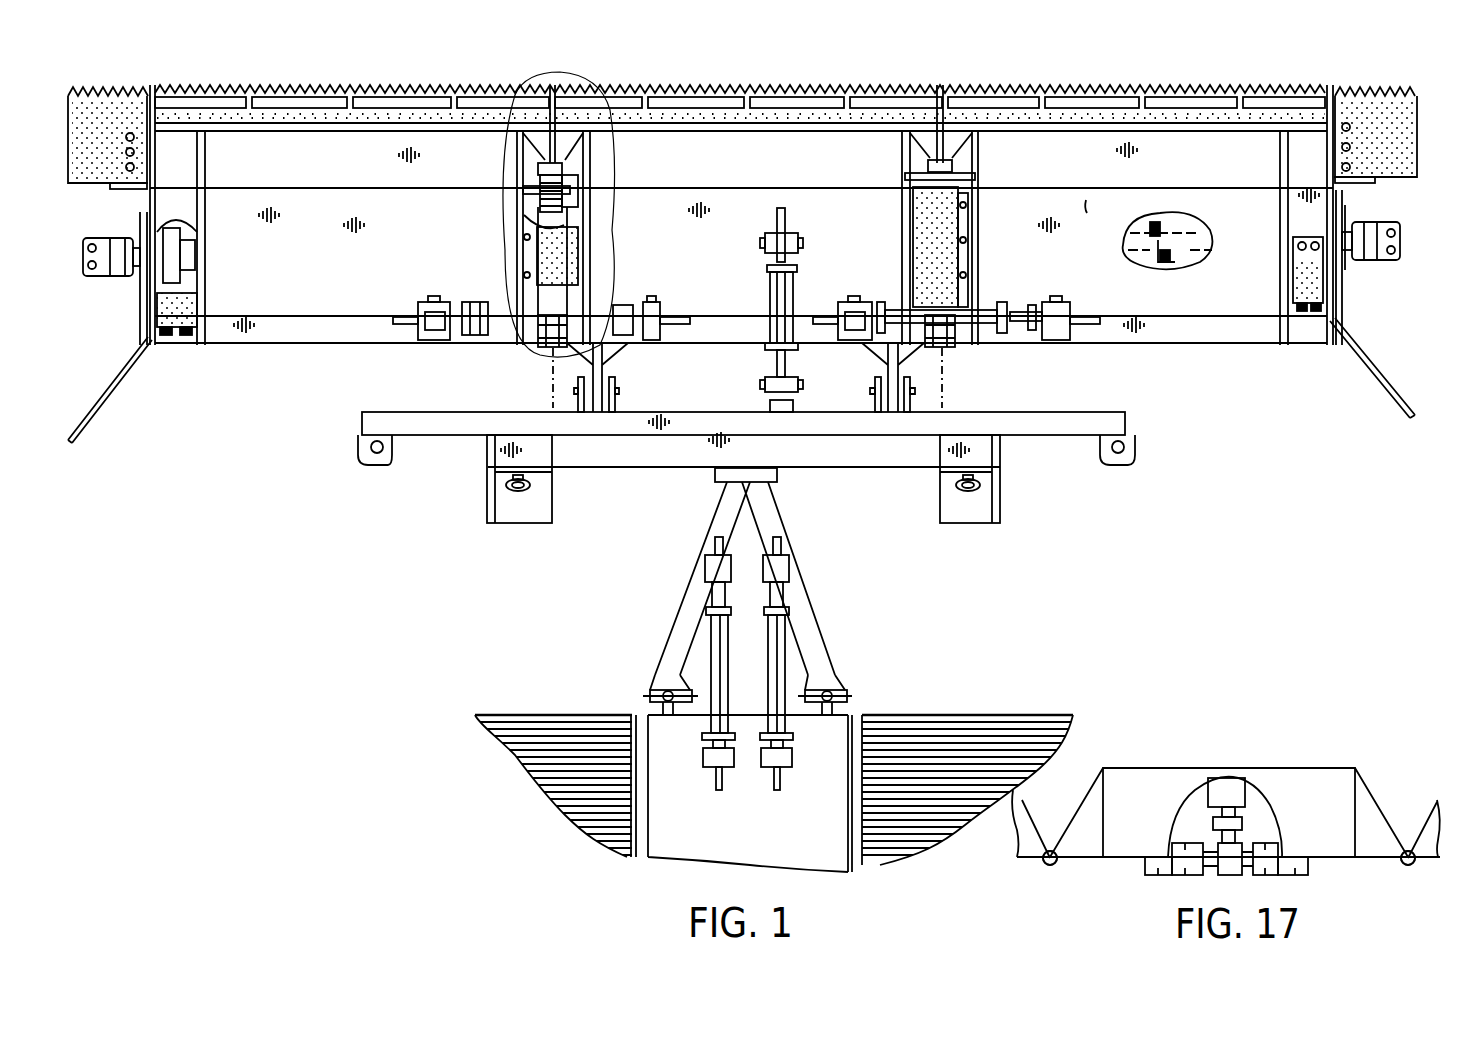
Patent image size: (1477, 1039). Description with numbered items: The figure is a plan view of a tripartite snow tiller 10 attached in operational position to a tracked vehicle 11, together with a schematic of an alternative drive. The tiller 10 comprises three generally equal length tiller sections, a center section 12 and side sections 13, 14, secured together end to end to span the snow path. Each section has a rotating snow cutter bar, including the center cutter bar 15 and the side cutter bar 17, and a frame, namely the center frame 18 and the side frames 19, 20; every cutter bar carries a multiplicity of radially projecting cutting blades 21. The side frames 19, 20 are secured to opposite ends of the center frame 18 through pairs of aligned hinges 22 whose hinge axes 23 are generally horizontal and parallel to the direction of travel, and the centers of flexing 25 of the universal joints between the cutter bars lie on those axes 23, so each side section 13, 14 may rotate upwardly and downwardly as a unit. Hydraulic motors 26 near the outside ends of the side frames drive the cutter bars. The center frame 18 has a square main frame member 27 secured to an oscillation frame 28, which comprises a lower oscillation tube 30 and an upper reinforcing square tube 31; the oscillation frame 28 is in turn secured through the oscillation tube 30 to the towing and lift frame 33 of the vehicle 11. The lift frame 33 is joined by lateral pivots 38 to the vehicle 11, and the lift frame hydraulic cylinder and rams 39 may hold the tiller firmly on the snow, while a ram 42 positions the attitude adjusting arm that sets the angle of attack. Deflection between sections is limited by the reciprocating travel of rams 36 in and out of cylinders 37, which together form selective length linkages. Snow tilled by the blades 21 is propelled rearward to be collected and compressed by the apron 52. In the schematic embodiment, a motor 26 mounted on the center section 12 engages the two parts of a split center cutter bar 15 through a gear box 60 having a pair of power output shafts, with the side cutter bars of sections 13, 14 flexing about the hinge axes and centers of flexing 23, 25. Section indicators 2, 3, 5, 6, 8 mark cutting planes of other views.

In FIG. 1, the section line 2- 2 is at (53, 128).
In FIG. 1, the section line 3- 3 is at (1263, 437).
In FIG. 1, the cylinder support frame assembly 5 is at (610, 226).
In FIG. 1, the section line 6- 6 is at (838, 400).
In FIG. 1, the section line 8- 8 is at (892, 163).
In FIG. 1, the snow tiller 10 is at (268, 422).
In FIG. 1, the tracked vehicle 11 is at (1072, 712).
In FIG. 1, the center section 12 is at (735, 290).
In FIG. 17, the center section 12 is at (1297, 760).
In FIG. 1, the side section 13 is at (330, 282).
In FIG. 17, the side section 13 is at (1418, 835).
In FIG. 1, the side section 14 is at (1197, 277).
In FIG. 17, the side section 14 is at (1032, 828).
In FIG. 17, the center cutter bar 15 is at (1145, 872).
In FIG. 1, the cutter bar 17 is at (1190, 248).
In FIG. 1, the center frame 18 is at (695, 343).
In FIG. 1, the side frame 19 is at (360, 332).
In FIG. 1, the side frame 20 is at (1233, 318).
In FIG. 1, the cutting blades 21 is at (1168, 258).
In FIG. 1, the hinges 22 is at (573, 188).
In FIG. 1, the hinge axes 23 is at (550, 400).
In FIG. 17, the hinge axes 23 is at (1058, 866).
In FIG. 17, the centers of flexing 25 is at (1418, 866).
In FIG. 1, the hydraulic motors 26 is at (122, 278).
In FIG. 17, the hydraulic motors 26 is at (1223, 793).
In FIG. 1, the main frame member 27 is at (668, 343).
In FIG. 1, the oscillation frame 28 is at (662, 480).
In FIG. 1, the oscillation tube 30 is at (905, 462).
In FIG. 1, the reinforcing square tube 31 is at (1072, 435).
In FIG. 1, the towing and lift frame 33 is at (800, 568).
In FIG. 1, the rams 36 is at (1027, 320).
In FIG. 1, the cylinders 37 is at (985, 320).
In FIG. 1, the lateral pivots 38 is at (770, 358).
In FIG. 1, the lift frame hydraulic cylinder and rams 39 is at (785, 655).
In FIG. 1, the ram 42 is at (140, 305).
In FIG. 1, the apron 52 is at (1087, 213).
In FIG. 17, the gear box 60 is at (1228, 877).